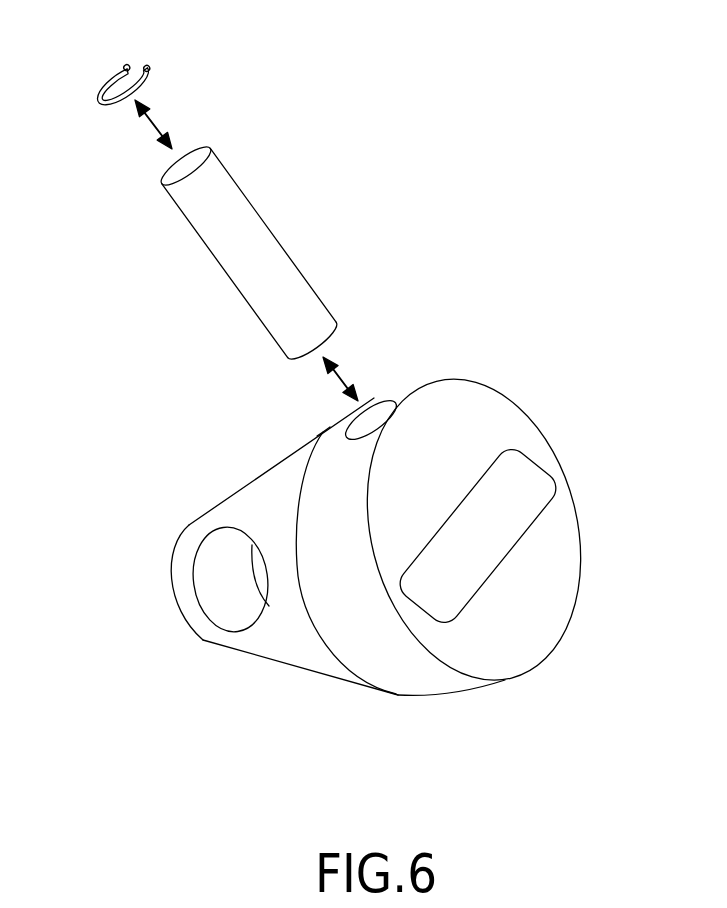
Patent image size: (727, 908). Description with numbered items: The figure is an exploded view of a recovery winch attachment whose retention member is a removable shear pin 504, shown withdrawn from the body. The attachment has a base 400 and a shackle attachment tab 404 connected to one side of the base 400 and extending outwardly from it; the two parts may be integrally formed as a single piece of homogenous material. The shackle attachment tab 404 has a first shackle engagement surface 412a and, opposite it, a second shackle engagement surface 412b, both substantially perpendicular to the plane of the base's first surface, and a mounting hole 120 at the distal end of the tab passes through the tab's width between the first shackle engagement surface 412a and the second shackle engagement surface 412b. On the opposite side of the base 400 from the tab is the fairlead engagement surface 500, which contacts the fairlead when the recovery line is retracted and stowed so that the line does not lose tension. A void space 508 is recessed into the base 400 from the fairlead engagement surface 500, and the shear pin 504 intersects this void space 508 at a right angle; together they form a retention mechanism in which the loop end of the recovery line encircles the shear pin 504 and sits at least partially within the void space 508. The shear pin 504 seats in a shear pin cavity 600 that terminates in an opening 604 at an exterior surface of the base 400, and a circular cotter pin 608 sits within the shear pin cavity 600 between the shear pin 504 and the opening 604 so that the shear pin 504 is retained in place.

The mounting hole 120 is at (236, 616).
The base 400 is at (430, 687).
The shackle attachment tab 404 is at (293, 655).
The first shackle engagement surface 412a is at (288, 526).
The second shackle engagement surface 412b is at (208, 482).
The fairlead engagement surface 500 is at (470, 412).
The shear pin 504 is at (252, 232).
The void space 508 is at (527, 480).
The shear pin cavity 600 is at (377, 418).
The opening 604 is at (323, 432).
The circular cotter pin 608 is at (128, 69).